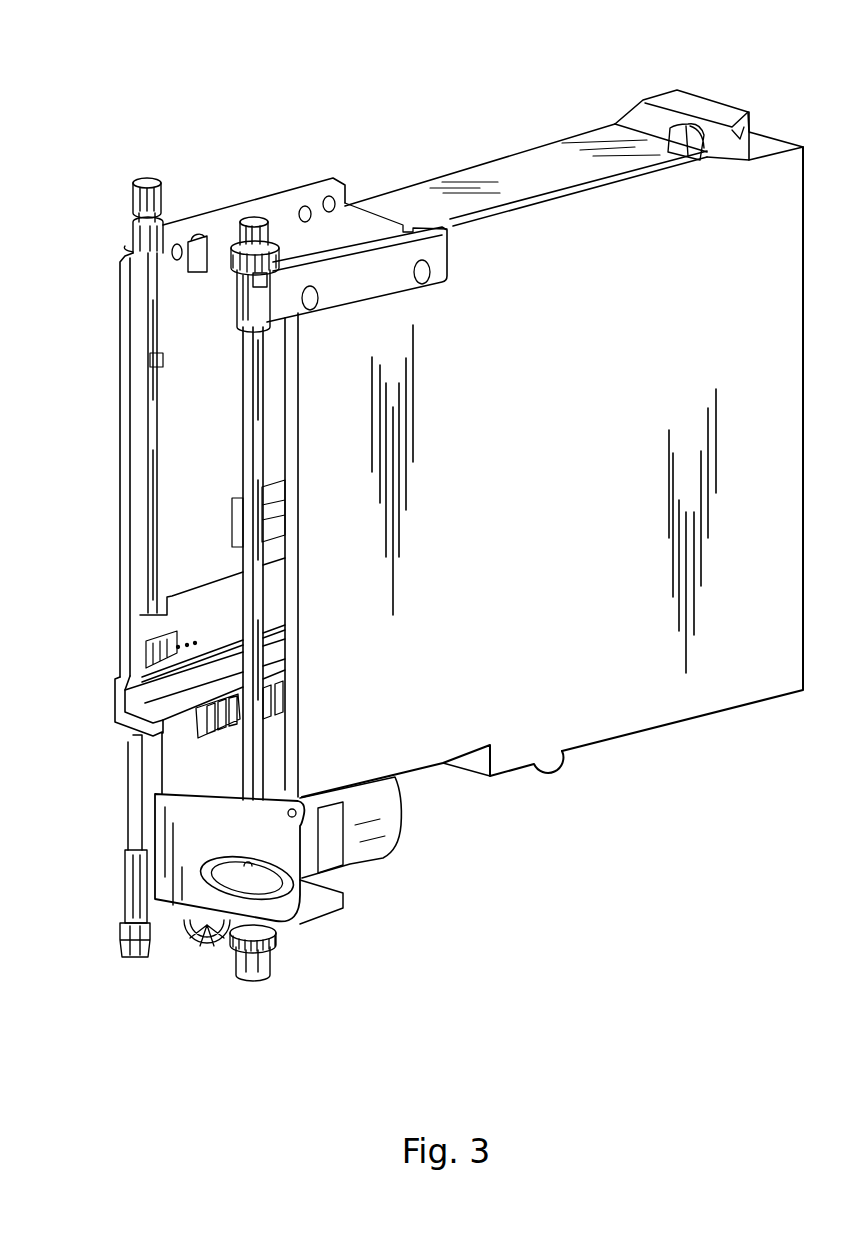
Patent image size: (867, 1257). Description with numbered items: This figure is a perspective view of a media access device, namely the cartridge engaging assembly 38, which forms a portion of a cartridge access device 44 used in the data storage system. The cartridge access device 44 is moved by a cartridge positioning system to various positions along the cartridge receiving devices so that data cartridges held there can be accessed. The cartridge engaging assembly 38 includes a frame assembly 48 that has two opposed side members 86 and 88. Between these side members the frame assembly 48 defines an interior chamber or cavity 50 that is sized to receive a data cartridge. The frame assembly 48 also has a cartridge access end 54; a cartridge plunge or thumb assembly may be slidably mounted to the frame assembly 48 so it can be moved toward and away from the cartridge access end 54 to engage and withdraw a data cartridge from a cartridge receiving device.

The cartridge engaging assembly 38 is at (170, 63).
The cartridge access device 44 is at (118, 310).
The frame assembly 48 is at (711, 96).
The interior chamber or cavity 50 is at (197, 388).
The cartridge access end 54 is at (120, 548).
The side member 86 is at (559, 445).
The side member 88 is at (178, 447).